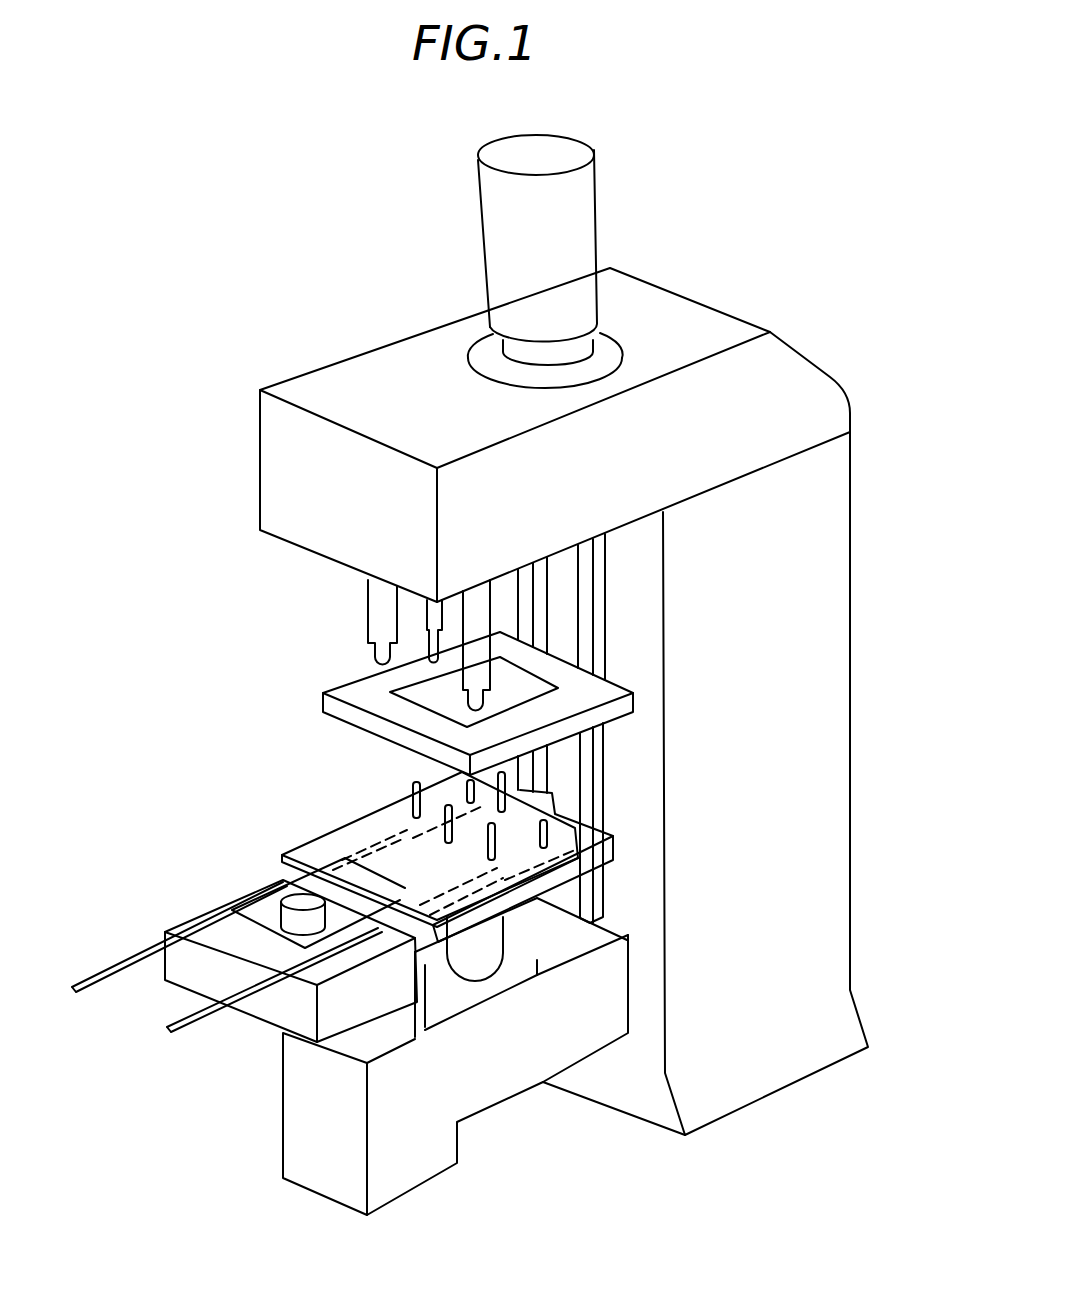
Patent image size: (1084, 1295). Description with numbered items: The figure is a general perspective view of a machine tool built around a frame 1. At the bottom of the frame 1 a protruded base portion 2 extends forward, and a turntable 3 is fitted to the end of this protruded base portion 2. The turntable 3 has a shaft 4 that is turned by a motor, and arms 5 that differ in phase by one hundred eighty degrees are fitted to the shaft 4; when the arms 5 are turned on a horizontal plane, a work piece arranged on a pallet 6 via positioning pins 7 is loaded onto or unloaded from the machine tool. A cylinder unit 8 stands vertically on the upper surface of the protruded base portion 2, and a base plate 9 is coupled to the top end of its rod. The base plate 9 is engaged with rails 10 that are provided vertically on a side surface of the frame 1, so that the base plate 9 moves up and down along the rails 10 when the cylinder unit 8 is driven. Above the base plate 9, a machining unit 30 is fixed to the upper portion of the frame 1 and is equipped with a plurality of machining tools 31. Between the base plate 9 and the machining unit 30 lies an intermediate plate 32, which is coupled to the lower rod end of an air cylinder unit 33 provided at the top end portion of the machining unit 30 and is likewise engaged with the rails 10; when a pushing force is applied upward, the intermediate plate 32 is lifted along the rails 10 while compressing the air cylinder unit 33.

The frame 1 is at (810, 696).
The protruded base portion 2 is at (495, 1077).
The turntable 3 is at (185, 925).
The shaft 4 is at (287, 917).
The arms 5 is at (338, 868).
The pallet 6 is at (358, 835).
The positioning pins 7 is at (413, 786).
The cylinder unit 8 is at (477, 940).
The base plate 9 is at (585, 882).
The rails 10 is at (595, 610).
The machining unit 30 is at (295, 480).
The machining tools 31 is at (380, 633).
The intermediate plate 32 is at (333, 705).
The air cylinder unit 33 is at (372, 635).